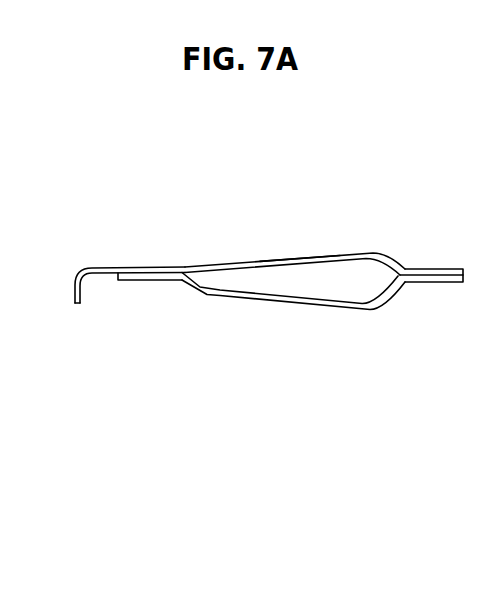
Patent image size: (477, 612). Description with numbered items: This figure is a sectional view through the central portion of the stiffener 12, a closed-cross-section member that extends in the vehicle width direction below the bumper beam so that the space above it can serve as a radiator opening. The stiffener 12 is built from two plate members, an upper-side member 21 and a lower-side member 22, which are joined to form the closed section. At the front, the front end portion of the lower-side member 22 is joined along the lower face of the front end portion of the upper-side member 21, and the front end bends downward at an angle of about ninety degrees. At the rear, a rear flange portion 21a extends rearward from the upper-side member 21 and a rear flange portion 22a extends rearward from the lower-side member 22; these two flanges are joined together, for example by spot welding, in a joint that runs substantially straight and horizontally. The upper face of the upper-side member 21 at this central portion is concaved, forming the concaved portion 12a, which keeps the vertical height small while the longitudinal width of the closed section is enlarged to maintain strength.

The stiffener 12 is at (107, 253).
The concaved portion 12a is at (305, 258).
The upper-side member 21 is at (245, 258).
The lower-side member 22 is at (290, 300).
The rear flange portion 21a is at (432, 268).
The rear flange portion 22a is at (440, 283).